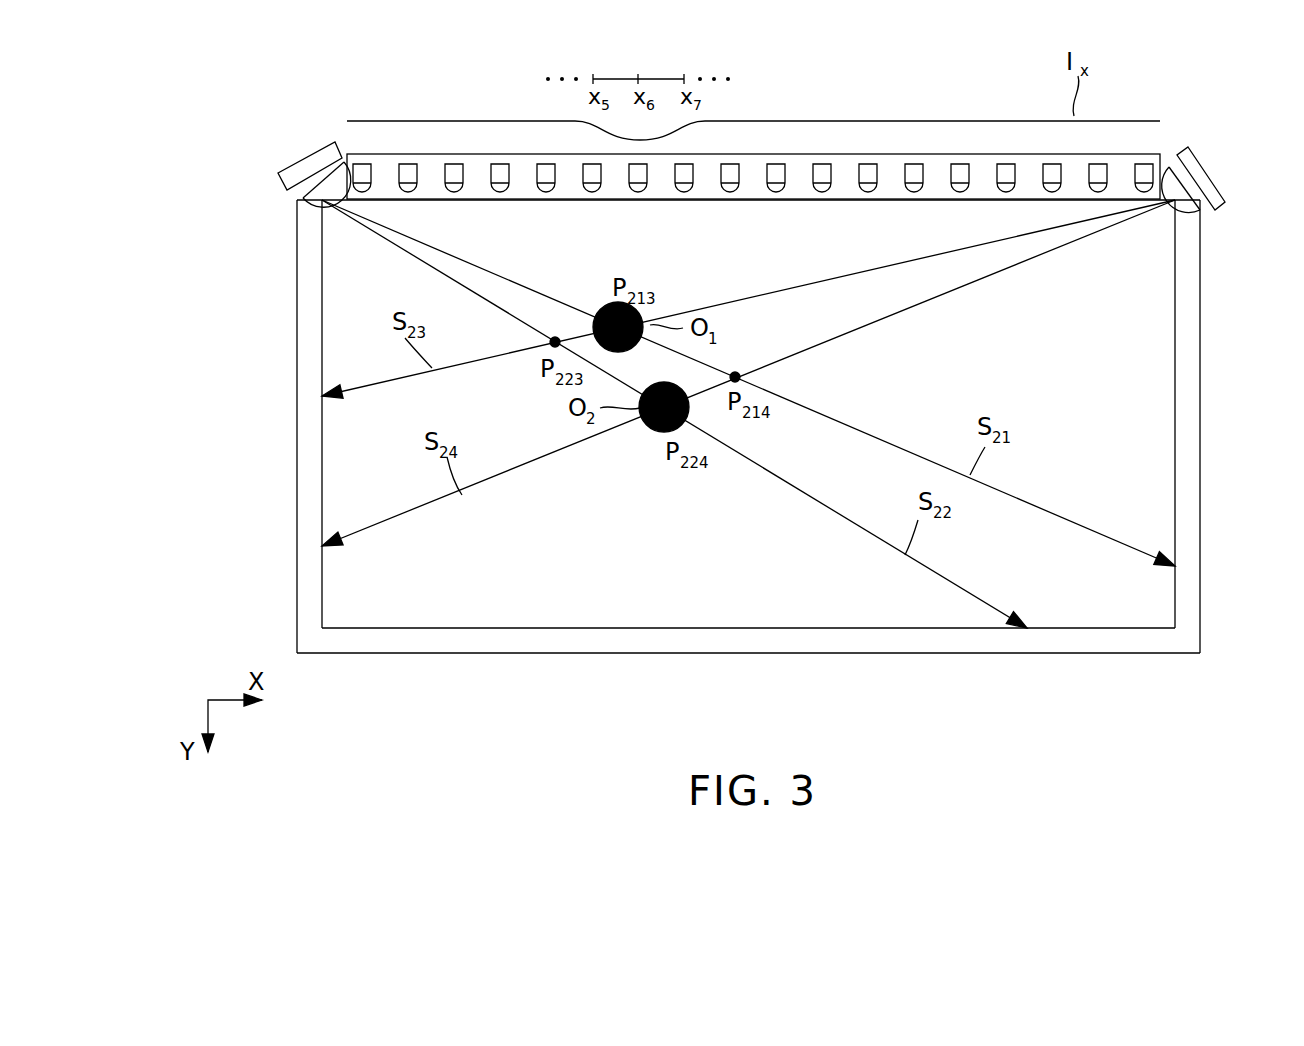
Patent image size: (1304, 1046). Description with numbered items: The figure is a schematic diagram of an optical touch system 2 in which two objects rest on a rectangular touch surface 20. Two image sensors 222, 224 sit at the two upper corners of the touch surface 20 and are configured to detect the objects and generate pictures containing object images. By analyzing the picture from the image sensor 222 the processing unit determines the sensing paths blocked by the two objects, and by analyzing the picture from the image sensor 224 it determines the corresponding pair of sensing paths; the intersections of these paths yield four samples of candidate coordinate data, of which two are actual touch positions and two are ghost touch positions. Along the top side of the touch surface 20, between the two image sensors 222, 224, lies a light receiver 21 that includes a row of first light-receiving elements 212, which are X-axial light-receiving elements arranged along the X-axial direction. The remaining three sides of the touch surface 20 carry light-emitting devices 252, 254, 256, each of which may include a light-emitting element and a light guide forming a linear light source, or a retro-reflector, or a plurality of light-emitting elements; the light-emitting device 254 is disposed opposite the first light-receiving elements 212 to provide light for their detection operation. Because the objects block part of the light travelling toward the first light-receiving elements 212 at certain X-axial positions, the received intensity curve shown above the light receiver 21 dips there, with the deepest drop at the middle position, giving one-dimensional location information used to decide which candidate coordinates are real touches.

The optical touch system 2 is at (198, 87).
The touch surface 20 is at (1137, 325).
The light receiver 21 is at (358, 158).
The first light-receiving element 212 is at (1142, 168).
The image sensor 222 is at (305, 158).
The image sensor 224 is at (1202, 180).
The light-emitting device 252 is at (305, 432).
The light-emitting device 254 is at (750, 640).
The light-emitting device 256 is at (1187, 428).